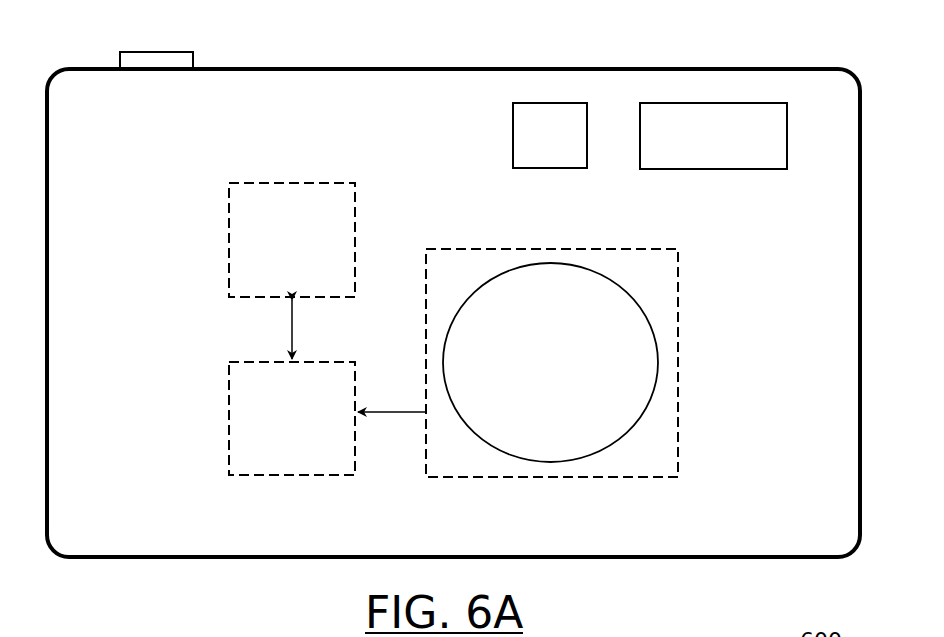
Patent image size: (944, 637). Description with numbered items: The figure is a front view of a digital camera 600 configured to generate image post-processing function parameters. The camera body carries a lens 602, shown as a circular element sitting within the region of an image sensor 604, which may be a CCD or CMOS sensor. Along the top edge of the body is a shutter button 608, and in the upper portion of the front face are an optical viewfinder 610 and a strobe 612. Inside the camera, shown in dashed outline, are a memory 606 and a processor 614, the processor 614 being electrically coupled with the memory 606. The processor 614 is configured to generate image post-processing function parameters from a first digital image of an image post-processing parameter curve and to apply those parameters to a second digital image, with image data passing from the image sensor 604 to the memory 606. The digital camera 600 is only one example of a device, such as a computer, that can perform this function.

The digital camera 600 is at (453, 313).
The lens 602 is at (550, 362).
The image sensor 604 is at (682, 315).
The memory 606 is at (292, 418).
The shutter button 608 is at (139, 49).
The optical viewfinder 610 is at (550, 135).
The strobe 612 is at (713, 136).
The processor 614 is at (292, 240).